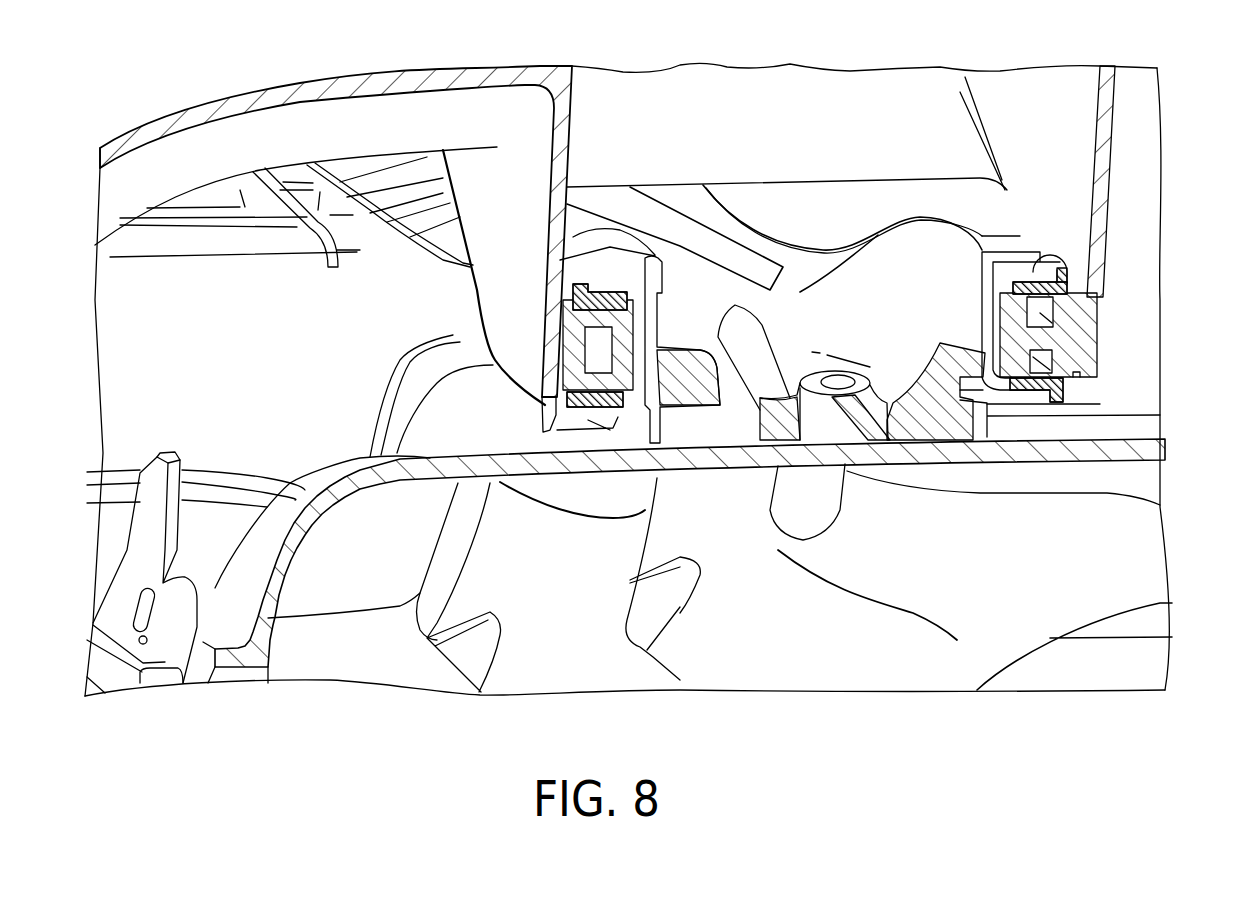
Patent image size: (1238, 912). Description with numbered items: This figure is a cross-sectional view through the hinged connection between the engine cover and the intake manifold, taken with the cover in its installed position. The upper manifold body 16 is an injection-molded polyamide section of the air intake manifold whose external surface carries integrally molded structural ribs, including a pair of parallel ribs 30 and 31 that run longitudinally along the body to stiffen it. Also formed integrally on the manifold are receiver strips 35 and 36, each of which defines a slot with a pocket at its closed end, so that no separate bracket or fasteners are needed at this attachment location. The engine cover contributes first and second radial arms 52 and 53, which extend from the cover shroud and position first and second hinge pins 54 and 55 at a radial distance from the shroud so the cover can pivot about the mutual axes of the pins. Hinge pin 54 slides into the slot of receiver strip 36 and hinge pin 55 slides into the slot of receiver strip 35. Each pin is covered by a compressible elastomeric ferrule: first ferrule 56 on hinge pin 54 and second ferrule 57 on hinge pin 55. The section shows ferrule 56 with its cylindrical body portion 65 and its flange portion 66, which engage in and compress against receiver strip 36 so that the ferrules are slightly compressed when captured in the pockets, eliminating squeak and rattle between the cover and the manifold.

The upper manifold body 16 is at (537, 478).
The rib 30 is at (688, 300).
The rib 31 is at (873, 367).
The receiver strip 35 is at (605, 266).
The receiver strip 36 is at (1003, 250).
The first radial arm 52 is at (1038, 108).
The second radial arm 53 is at (487, 254).
The first hinge pin 54 is at (1050, 337).
The second hinge pin 55 is at (585, 350).
The first elastomeric ferrule 56 is at (1045, 252).
The second elastomeric ferrule 57 is at (552, 402).
The cylindrical body portion 65 is at (1028, 393).
The flange portion 66 is at (1063, 393).